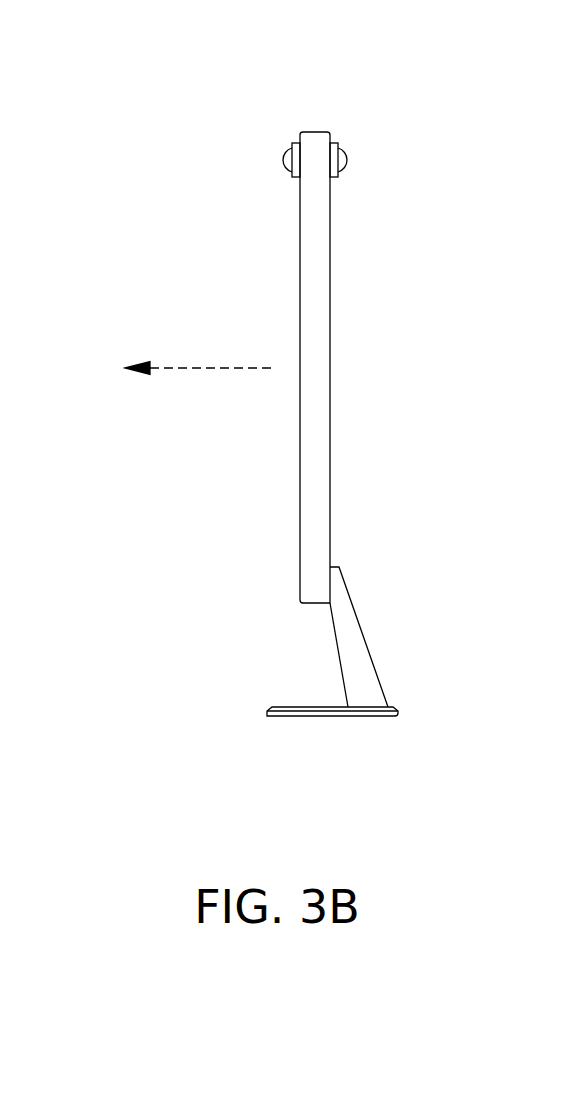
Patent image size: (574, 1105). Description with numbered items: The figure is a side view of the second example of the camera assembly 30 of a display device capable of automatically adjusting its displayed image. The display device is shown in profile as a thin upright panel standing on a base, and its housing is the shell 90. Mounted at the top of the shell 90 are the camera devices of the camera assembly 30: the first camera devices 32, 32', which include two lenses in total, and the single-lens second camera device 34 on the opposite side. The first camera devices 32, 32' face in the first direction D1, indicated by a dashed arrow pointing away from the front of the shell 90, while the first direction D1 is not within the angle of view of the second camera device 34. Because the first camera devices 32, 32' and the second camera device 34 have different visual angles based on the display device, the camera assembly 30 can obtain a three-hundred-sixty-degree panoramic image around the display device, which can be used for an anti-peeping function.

The camera assembly 30 is at (303, 95).
The first camera device 32 is at (263, 119).
The first camera device 32' is at (291, 160).
The second camera device 34 is at (356, 119).
The shell 90 is at (300, 272).
The first direction D1 is at (180, 369).